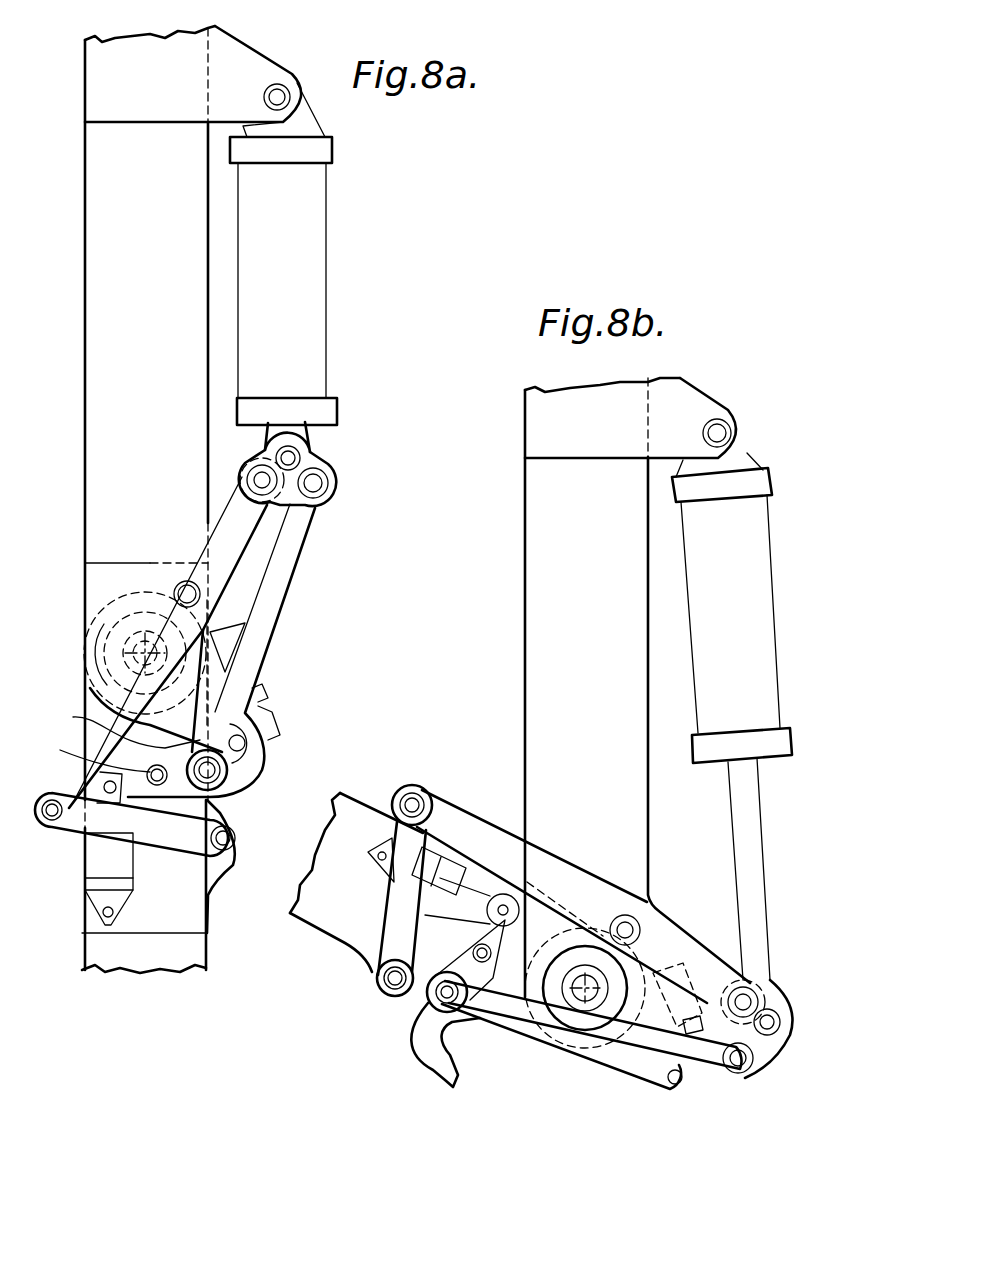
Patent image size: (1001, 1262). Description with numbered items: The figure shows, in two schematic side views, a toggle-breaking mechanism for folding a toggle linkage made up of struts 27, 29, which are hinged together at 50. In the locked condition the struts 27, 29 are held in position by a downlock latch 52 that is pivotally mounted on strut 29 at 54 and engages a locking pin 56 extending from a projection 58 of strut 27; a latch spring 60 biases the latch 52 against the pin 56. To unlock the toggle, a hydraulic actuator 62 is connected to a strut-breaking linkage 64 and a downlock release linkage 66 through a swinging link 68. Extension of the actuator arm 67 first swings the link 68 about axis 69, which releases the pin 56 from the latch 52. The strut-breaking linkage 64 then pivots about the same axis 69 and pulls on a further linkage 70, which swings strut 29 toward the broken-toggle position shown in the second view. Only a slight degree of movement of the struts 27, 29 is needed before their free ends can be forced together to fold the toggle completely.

In FIG. 8A, the strut 27 is at (74, 273).
In FIG. 8B, the strut 27 is at (521, 573).
In FIG. 8A, the strut 29 is at (95, 916).
In FIG. 8B, the strut 29 is at (347, 807).
In FIG. 8A, the hinge 50 is at (145, 653).
In FIG. 8B, the hinge 50 is at (597, 983).
In FIG. 8A, the downlock latch 52 is at (237, 781).
In FIG. 8A, the pivot 54 is at (150, 773).
In FIG. 8B, the pivot 54 is at (490, 965).
In FIG. 8A, the locking pin 56 is at (245, 743).
In FIG. 8B, the locking pin 56 is at (680, 1080).
In FIG. 8A, the projection 58 is at (90, 720).
In FIG. 8B, the projection 58 is at (636, 1085).
In FIG. 8A, the latch spring 60 is at (102, 857).
In FIG. 8B, the latch spring 60 is at (433, 900).
In FIG. 8A, the hydraulic actuator 62 is at (322, 290).
In FIG. 8B, the hydraulic actuator 62 is at (703, 678).
In FIG. 8A, the strut-breaking linkage 64 is at (190, 548).
In FIG. 8B, the strut-breaking linkage 64 is at (463, 818).
In FIG. 8A, the downlock release linkage 66 is at (298, 566).
In FIG. 8B, the downlock release linkage 66 is at (607, 1073).
In FIG. 8A, the actuator arm 67 is at (313, 440).
In FIG. 8B, the actuator arm 67 is at (763, 840).
In FIG. 8A, the swinging link 68 is at (327, 460).
In FIG. 8B, the swinging link 68 is at (770, 1060).
In FIG. 8A, the axis 69 is at (262, 480).
In FIG. 8B, the axis 69 is at (625, 925).
In FIG. 8A, the linkage 70 is at (178, 840).
In FIG. 8B, the linkage 70 is at (393, 902).